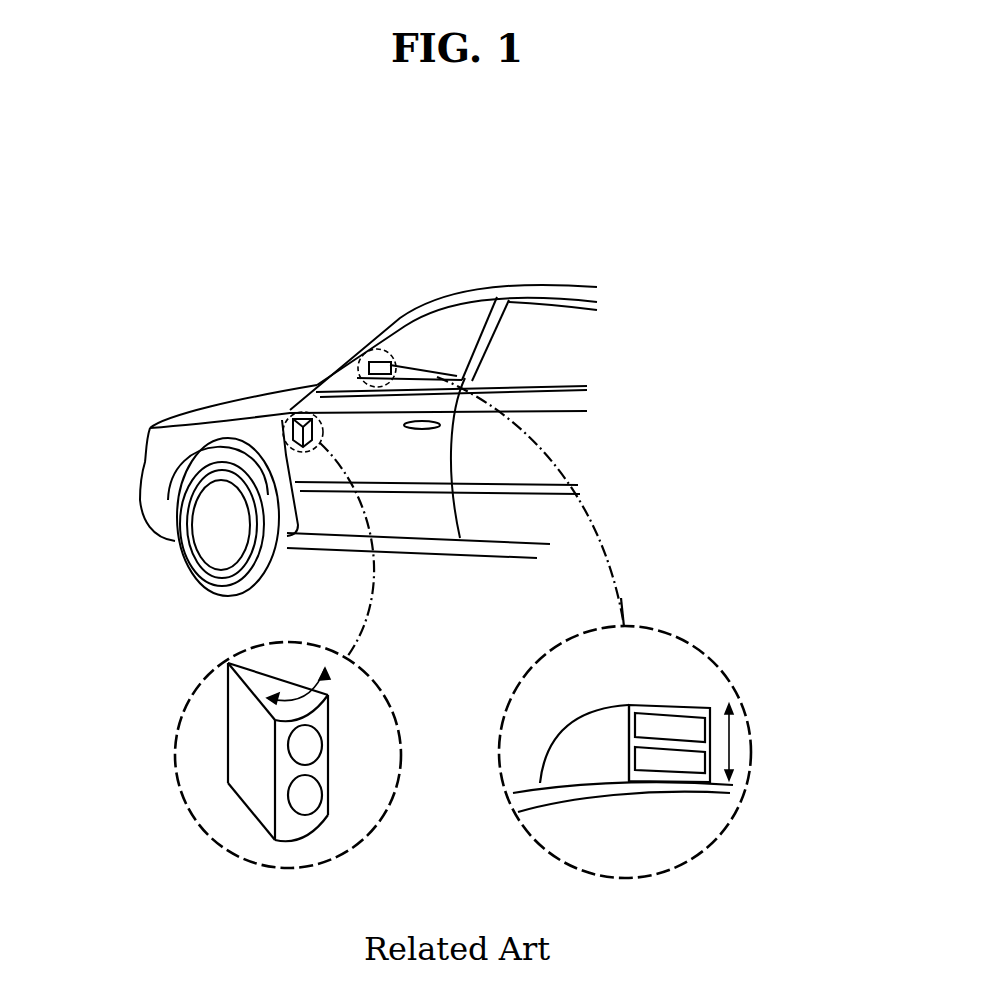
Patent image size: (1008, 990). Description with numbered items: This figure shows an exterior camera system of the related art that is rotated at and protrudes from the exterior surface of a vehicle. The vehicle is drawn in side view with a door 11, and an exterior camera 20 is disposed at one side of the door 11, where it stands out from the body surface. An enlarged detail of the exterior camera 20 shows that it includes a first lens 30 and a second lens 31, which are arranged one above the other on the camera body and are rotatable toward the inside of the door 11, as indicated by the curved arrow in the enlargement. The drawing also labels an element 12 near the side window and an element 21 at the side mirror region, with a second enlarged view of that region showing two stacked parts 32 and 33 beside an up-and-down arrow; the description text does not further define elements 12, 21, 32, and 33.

The door 11 is at (327, 512).
The door glass 12 is at (423, 378).
The exterior camera 20 is at (288, 408).
The side mirror 21 is at (372, 355).
The first lens 30 is at (303, 743).
The second lens 31 is at (310, 793).
The upper indicator 32 is at (683, 723).
The lower indicator 33 is at (683, 763).